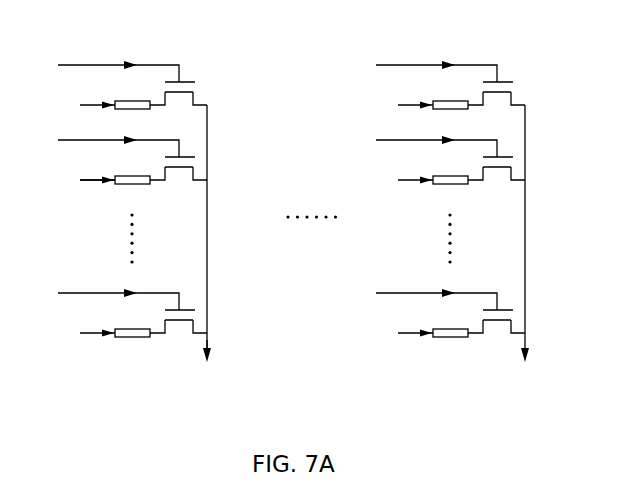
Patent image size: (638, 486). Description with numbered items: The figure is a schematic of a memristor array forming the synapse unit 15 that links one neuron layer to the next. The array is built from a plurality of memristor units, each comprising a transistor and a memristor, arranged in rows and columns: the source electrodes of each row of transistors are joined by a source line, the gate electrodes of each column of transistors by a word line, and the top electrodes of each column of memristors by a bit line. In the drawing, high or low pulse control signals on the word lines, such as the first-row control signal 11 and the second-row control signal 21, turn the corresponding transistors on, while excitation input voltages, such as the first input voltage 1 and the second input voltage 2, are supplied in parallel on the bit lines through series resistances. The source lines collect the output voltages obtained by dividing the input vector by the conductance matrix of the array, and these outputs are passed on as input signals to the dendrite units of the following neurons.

The synapse unit 15 is at (260, 39).
The first control signal line of first column 11 is at (118, 64).
The second control signal line of first column 21 is at (118, 139).
The first input voltage / first output 1 is at (207, 365).
The second input voltage 2 is at (96, 170).